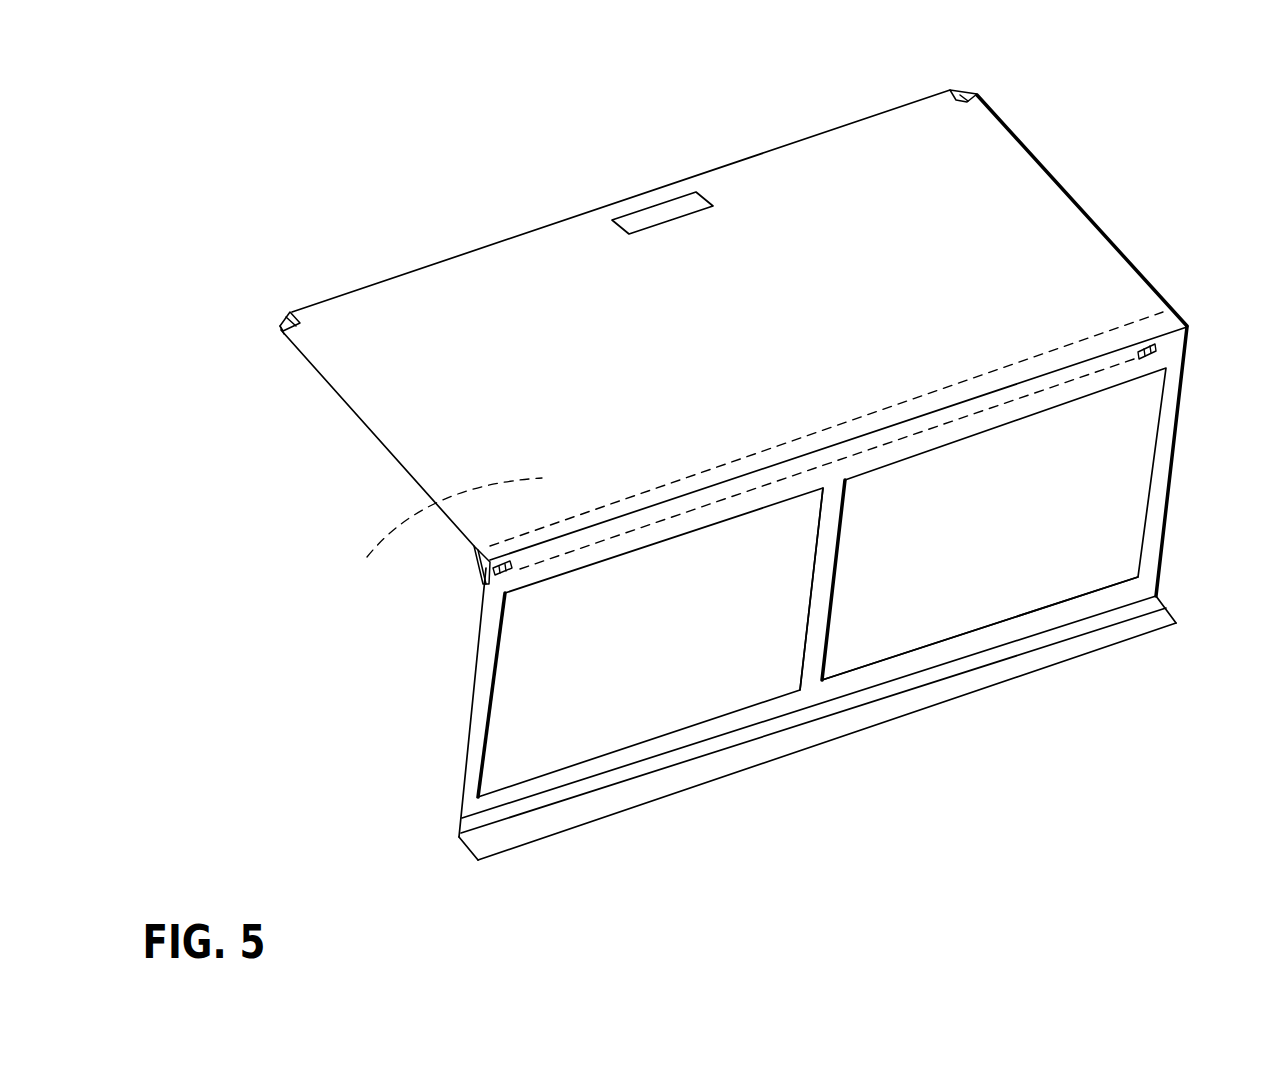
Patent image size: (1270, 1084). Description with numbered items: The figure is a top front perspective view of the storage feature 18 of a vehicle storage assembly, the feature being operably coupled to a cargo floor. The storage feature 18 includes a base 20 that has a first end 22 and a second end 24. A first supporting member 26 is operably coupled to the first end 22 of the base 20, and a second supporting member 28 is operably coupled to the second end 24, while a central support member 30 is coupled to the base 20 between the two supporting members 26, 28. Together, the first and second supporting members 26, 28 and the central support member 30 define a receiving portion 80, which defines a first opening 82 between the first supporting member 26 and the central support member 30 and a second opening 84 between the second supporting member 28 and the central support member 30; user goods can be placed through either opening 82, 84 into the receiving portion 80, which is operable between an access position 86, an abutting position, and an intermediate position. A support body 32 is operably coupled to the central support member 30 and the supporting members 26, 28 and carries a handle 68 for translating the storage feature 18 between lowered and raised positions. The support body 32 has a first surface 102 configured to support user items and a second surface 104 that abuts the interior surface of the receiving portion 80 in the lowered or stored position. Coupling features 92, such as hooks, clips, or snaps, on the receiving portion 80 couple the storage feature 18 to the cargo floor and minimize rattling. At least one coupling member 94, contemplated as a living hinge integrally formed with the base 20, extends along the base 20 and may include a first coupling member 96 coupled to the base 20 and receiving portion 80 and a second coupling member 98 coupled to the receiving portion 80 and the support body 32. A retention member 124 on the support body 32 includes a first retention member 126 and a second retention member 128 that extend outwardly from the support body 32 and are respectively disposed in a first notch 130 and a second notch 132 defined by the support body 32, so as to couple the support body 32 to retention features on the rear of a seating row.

The storage feature 18 is at (233, 287).
The base 20 is at (815, 690).
The first end 22 is at (467, 812).
The second end 24 is at (1162, 588).
The first supporting member 26 is at (483, 677).
The second supporting member 28 is at (1162, 500).
The central support member 30 is at (817, 614).
The support body 32 is at (1005, 238).
The handle 68 is at (662, 206).
The receiving portion 80 is at (485, 722).
The first opening 82 is at (655, 662).
The second opening 84 is at (958, 570).
The access position 86 is at (893, 637).
The coupling features 92 is at (493, 571).
The coupling member 94 is at (470, 863).
The first coupling member 96 is at (558, 820).
The second coupling member 98 is at (478, 556).
The first surface 102 is at (503, 410).
The second surface 104 is at (360, 582).
The retention member 124 is at (282, 305).
The first retention member 126 is at (288, 319).
The second retention member 128 is at (959, 88).
The first notch 130 is at (283, 333).
The second notch 132 is at (976, 96).